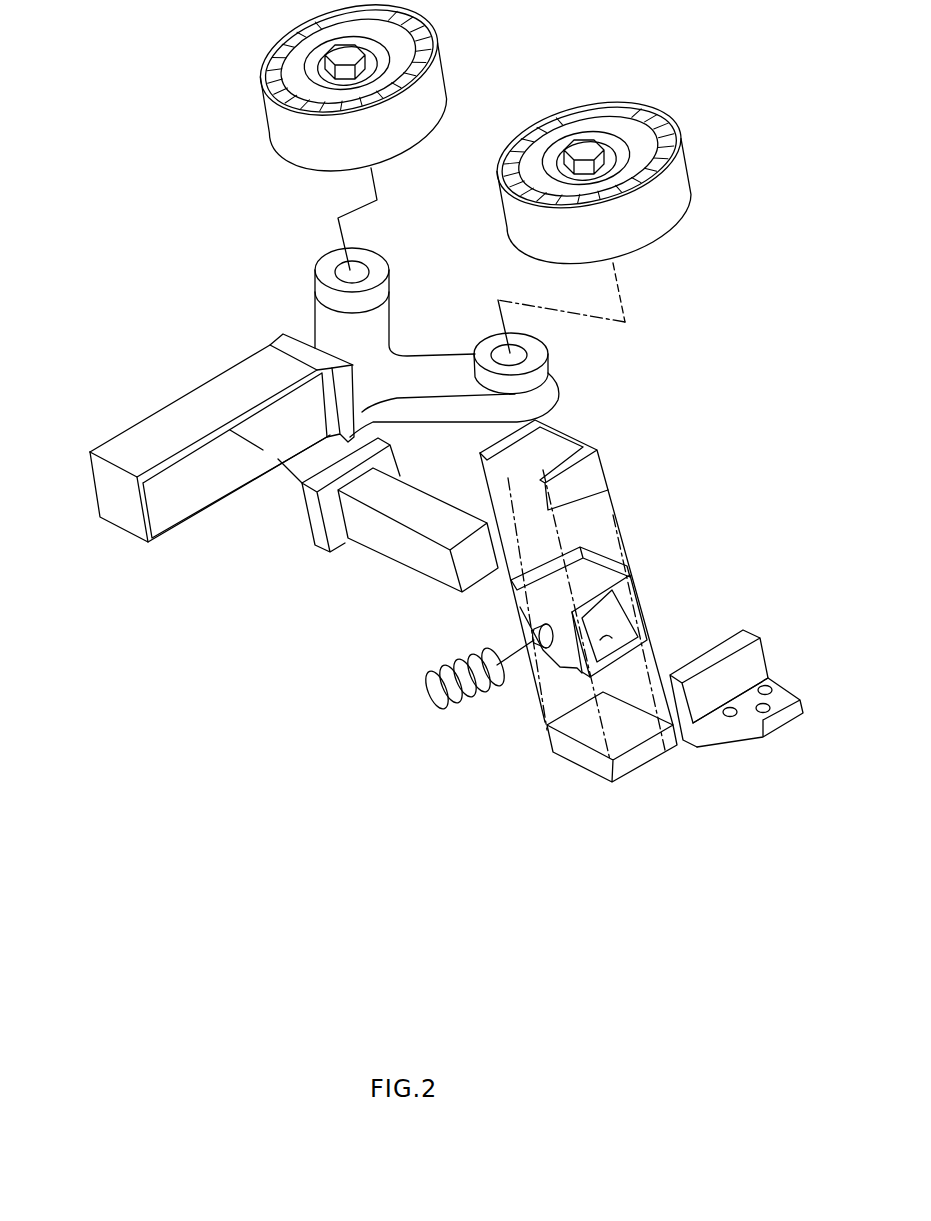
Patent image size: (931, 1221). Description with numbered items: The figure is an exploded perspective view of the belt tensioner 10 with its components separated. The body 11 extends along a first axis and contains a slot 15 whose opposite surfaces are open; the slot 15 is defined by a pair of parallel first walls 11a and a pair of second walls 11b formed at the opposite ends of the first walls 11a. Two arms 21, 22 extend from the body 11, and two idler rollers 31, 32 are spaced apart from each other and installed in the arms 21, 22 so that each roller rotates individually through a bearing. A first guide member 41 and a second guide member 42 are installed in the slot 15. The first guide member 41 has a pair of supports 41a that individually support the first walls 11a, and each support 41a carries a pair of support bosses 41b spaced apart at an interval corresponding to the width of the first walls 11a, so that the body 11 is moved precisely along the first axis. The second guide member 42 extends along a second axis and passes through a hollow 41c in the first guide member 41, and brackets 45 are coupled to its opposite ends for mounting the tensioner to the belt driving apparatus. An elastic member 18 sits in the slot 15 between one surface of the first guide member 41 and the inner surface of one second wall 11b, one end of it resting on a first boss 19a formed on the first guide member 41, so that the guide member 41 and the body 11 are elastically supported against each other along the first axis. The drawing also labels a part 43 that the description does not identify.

The belt tensioner 10 is at (98, 236).
The body 11 is at (207, 454).
The first walls 11a is at (120, 440).
The second walls 11b is at (327, 397).
The slot 15 is at (182, 488).
The elastic member 18 is at (450, 678).
The first boss 19a is at (532, 633).
The arm 21 is at (437, 364).
The arm 22 is at (377, 317).
The idler roller 31 is at (676, 180).
The idler roller 32 is at (435, 80).
The first guide member 41 is at (627, 604).
The supports 41a is at (623, 575).
The support bosses 41b is at (606, 558).
The hollow 41c is at (640, 632).
The second guide member 42 is at (432, 560).
The channel flange 43 is at (553, 452).
The brackets 45 is at (345, 545).